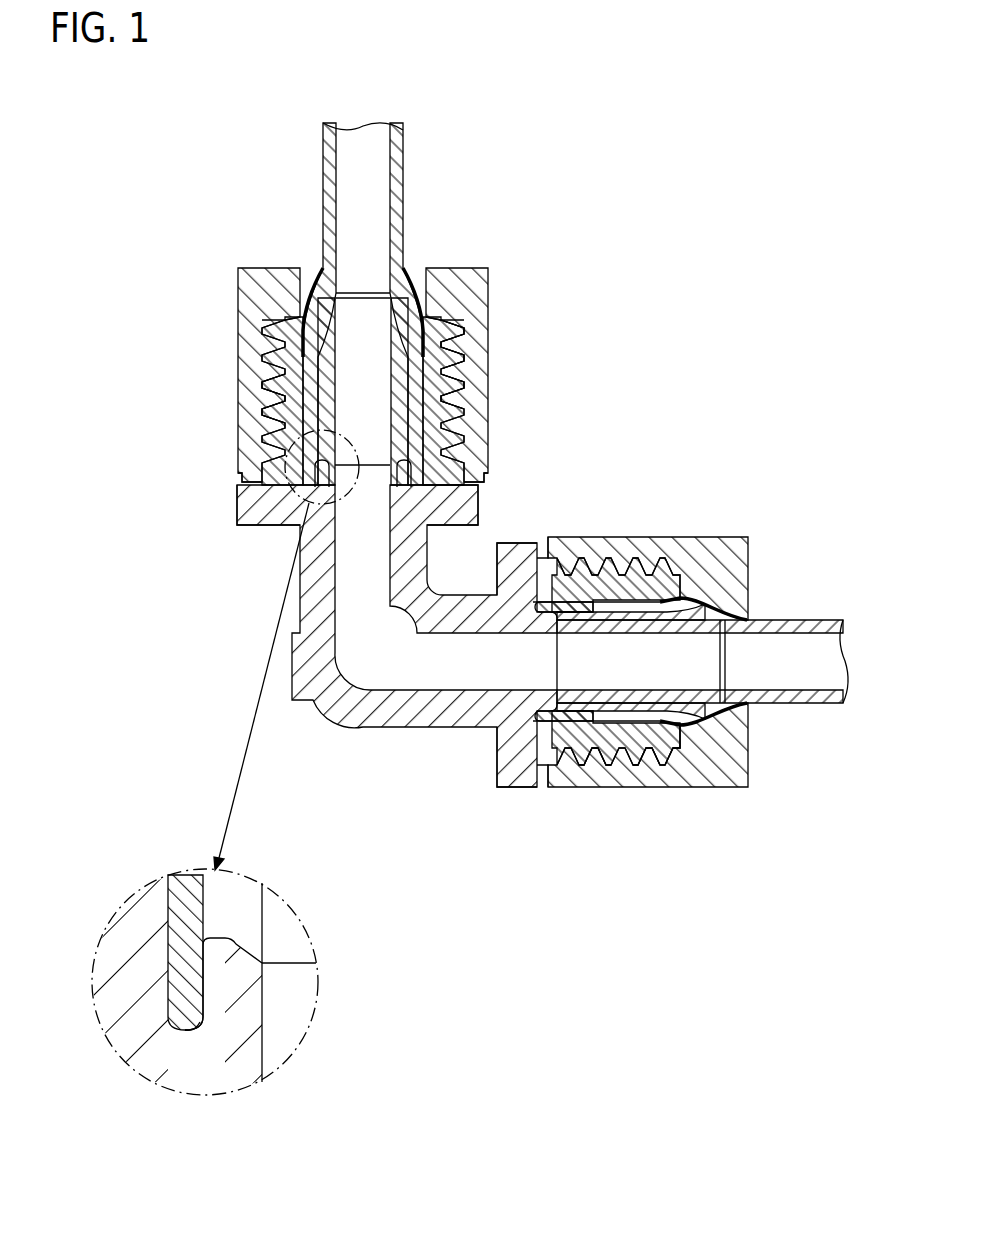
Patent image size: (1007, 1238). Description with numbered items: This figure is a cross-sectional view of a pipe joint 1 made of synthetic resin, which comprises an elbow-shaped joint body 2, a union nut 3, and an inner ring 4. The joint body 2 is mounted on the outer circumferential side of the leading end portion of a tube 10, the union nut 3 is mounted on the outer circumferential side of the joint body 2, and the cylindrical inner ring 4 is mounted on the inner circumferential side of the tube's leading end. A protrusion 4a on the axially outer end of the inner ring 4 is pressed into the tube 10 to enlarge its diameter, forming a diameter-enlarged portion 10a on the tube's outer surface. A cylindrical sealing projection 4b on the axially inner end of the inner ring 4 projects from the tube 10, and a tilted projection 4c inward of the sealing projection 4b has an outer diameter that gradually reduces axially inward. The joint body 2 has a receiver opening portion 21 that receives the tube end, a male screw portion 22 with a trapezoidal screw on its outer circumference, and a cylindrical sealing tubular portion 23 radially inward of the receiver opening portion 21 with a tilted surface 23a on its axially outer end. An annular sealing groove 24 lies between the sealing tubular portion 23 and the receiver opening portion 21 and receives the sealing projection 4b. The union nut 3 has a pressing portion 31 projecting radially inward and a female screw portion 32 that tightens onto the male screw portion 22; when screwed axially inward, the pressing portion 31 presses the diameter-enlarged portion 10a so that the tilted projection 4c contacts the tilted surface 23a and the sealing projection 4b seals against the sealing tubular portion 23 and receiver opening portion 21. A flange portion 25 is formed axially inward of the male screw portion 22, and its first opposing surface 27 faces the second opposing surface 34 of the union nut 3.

The pipe joint 1 is at (478, 248).
The joint body 2 is at (376, 733).
The union nut 3 is at (237, 360).
The inner ring 4 is at (442, 441).
The protrusion 4a is at (262, 326).
The sealing projection 4b is at (178, 975).
The tilted projection 4c is at (232, 1025).
The tube 10 is at (322, 162).
The diameter-enlarged portion 10a is at (452, 323).
The receiver opening portion 21 is at (432, 345).
The male screw portion 22 is at (458, 383).
The sealing tubular portion 23 is at (250, 990).
The tilted surface 23a is at (250, 948).
The sealing groove 24 is at (200, 1030).
The flange portion 25 is at (238, 508).
The first opposing surface 27 is at (466, 484).
The pressing portion 31 is at (289, 275).
The female screw portion 32 is at (262, 410).
The second opposing surface 34 is at (262, 480).